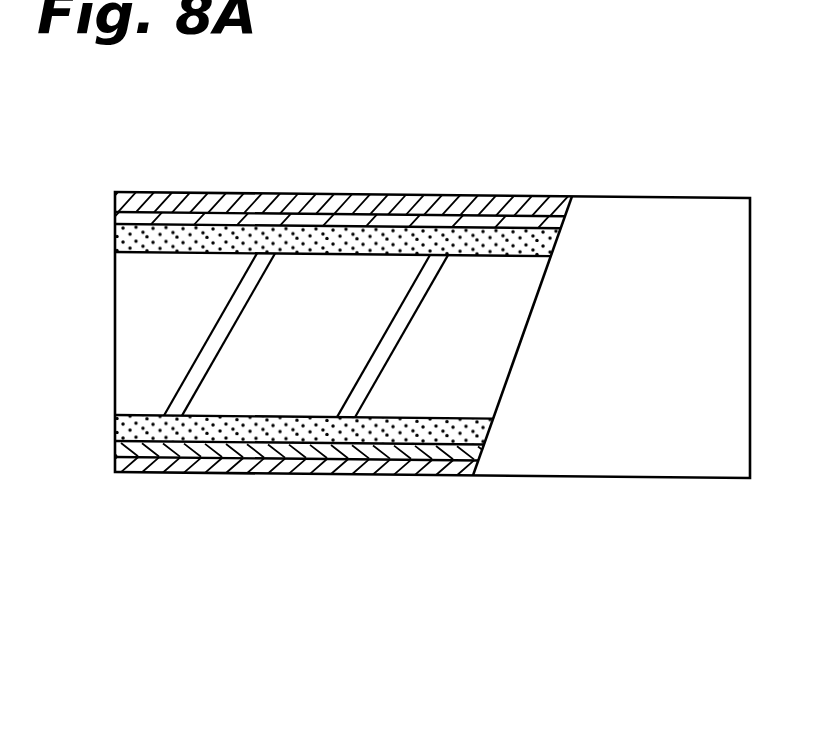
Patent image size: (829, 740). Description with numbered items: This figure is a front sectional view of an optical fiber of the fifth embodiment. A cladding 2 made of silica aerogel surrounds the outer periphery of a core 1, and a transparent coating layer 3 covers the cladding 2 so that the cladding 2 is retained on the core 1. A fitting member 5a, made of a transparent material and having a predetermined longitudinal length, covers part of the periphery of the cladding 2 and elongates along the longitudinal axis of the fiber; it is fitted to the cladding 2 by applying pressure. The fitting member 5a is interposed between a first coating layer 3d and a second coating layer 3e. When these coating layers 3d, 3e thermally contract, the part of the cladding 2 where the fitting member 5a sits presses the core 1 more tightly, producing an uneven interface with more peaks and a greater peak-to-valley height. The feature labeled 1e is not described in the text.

The core 1 is at (207, 272).
The spacer wall 1e is at (172, 414).
The cladding 2 is at (317, 240).
The coating layer 3 is at (652, 267).
The first coating layer 3d is at (447, 226).
The second coating layer 3e is at (507, 205).
The fitting member 5a is at (328, 452).